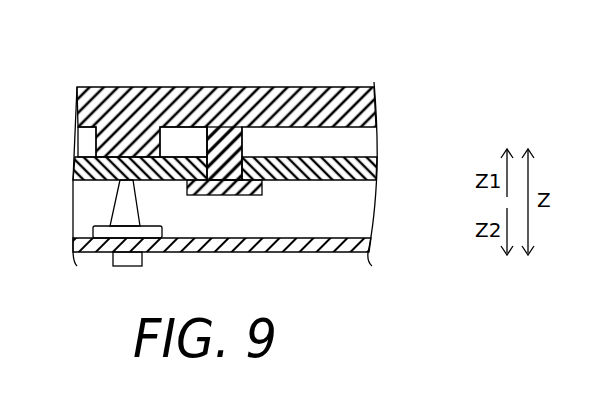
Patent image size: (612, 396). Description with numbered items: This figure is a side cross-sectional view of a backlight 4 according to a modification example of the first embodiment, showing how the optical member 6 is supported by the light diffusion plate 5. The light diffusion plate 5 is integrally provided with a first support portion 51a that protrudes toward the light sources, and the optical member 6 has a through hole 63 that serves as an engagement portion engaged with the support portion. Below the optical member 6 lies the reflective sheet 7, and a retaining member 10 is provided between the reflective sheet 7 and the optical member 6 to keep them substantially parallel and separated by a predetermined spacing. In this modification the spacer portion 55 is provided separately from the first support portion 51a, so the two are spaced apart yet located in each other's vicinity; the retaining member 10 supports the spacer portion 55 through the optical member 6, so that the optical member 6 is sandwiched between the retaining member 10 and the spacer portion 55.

The backlight 4 is at (449, 93).
The light diffusion plate 5 is at (380, 107).
The optical member 6 is at (378, 168).
The reflective sheet 7 is at (370, 247).
The retaining member 10 is at (137, 204).
The first support portion 51a is at (270, 187).
The spacer portion 55 is at (173, 102).
The through hole 63 is at (245, 152).